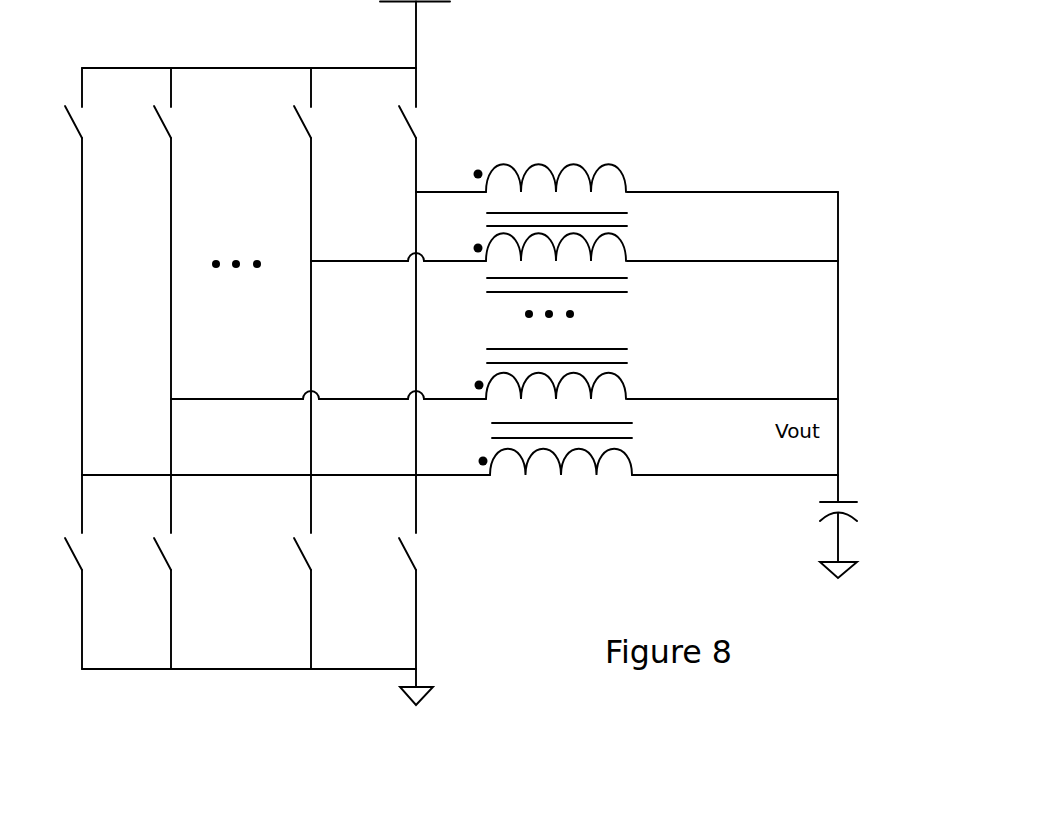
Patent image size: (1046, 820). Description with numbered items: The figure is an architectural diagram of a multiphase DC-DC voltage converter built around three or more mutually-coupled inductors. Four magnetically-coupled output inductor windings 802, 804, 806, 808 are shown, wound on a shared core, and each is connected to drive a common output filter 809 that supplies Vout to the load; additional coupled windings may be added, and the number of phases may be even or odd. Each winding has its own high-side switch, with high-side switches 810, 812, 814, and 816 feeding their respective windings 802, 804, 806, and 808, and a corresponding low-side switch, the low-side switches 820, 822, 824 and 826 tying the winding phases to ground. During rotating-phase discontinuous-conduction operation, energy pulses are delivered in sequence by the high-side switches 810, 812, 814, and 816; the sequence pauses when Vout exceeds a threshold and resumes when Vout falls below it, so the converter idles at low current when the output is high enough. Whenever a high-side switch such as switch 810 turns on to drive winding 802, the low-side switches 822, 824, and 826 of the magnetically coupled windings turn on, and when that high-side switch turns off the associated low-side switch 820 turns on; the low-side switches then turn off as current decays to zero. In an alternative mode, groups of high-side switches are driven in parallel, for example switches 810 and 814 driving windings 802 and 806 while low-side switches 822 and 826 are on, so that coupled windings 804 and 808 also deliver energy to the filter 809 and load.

The output inductor winding 802 is at (577, 163).
The output inductor winding 804 is at (630, 257).
The output inductor winding 806 is at (632, 393).
The output inductor winding 808 is at (632, 467).
The common filter 809 is at (847, 502).
The high-side switch 810 is at (417, 115).
The high-side switch 812 is at (305, 125).
The high-side switch 814 is at (168, 115).
The high-side switch 816 is at (85, 125).
The low-side switch 820 is at (410, 552).
The low-side switch 822 is at (305, 552).
The low-side switch 824 is at (173, 552).
The low-side switch 826 is at (75, 552).